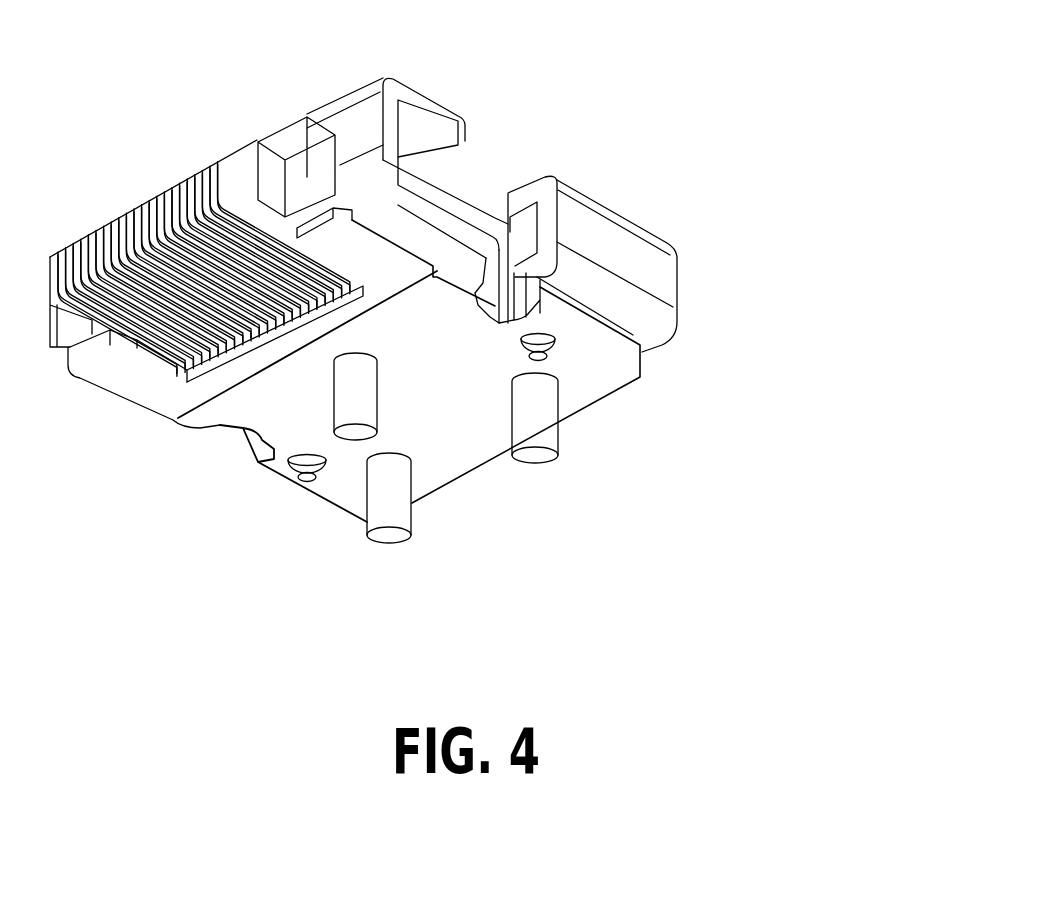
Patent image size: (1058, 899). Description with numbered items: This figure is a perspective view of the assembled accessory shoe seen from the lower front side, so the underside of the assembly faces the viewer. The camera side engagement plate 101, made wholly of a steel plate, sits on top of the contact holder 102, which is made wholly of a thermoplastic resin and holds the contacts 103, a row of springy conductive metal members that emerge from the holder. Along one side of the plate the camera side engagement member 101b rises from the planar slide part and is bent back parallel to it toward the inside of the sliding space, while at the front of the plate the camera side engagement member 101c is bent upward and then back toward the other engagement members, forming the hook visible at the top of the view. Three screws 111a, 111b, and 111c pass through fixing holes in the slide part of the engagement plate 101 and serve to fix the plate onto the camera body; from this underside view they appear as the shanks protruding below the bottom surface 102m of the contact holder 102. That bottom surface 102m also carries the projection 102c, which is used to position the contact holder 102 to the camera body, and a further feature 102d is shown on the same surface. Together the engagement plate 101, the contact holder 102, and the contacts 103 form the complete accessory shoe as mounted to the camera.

The camera side engagement plate 101 is at (463, 203).
The camera side engagement member 101b is at (658, 282).
The camera side engagement member 101c is at (410, 88).
The contact holder 102 is at (630, 358).
The projection 102c is at (307, 480).
The housing hole 102d is at (540, 358).
The bottom surface 102m is at (452, 433).
The contacts 103 is at (167, 343).
The screw 111a is at (389, 538).
The screw 111b is at (536, 460).
The screw 111c is at (348, 433).